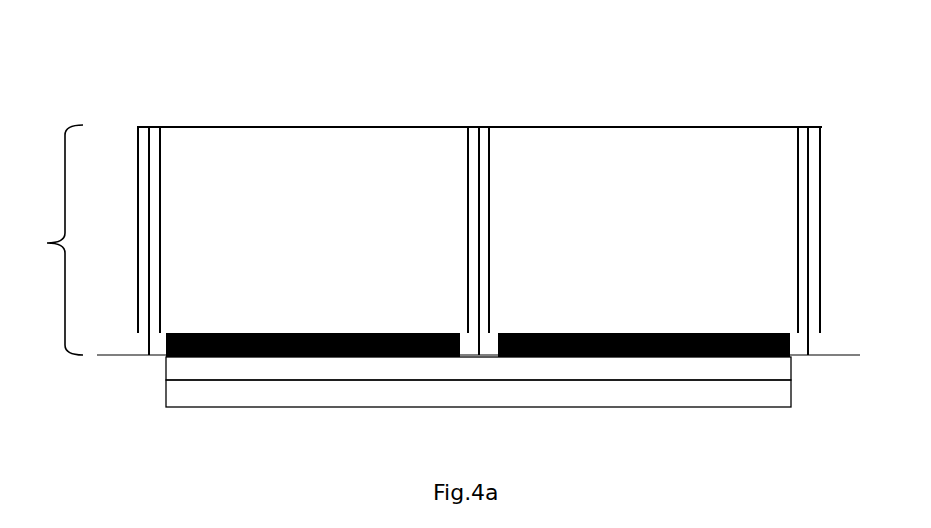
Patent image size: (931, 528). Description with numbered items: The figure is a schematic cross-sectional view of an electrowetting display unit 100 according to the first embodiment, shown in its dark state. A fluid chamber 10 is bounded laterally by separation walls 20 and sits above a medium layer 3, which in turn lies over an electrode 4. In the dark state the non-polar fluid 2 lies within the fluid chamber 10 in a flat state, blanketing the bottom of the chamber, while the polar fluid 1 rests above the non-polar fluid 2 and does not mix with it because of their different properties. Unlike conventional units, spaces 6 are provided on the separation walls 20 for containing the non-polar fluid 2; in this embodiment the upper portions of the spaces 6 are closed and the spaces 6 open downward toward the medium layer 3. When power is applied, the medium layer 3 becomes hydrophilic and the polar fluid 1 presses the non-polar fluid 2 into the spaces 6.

The polar fluid 1 is at (479, 177).
The non-polar fluid 2 is at (312, 357).
The medium layer 3 is at (176, 372).
The electrode 4 is at (575, 390).
The spaces 6 is at (156, 227).
The fluid chamber 10 is at (49, 240).
The separation walls 20 is at (149, 137).
The electrowetting display unit 100 is at (341, 121).